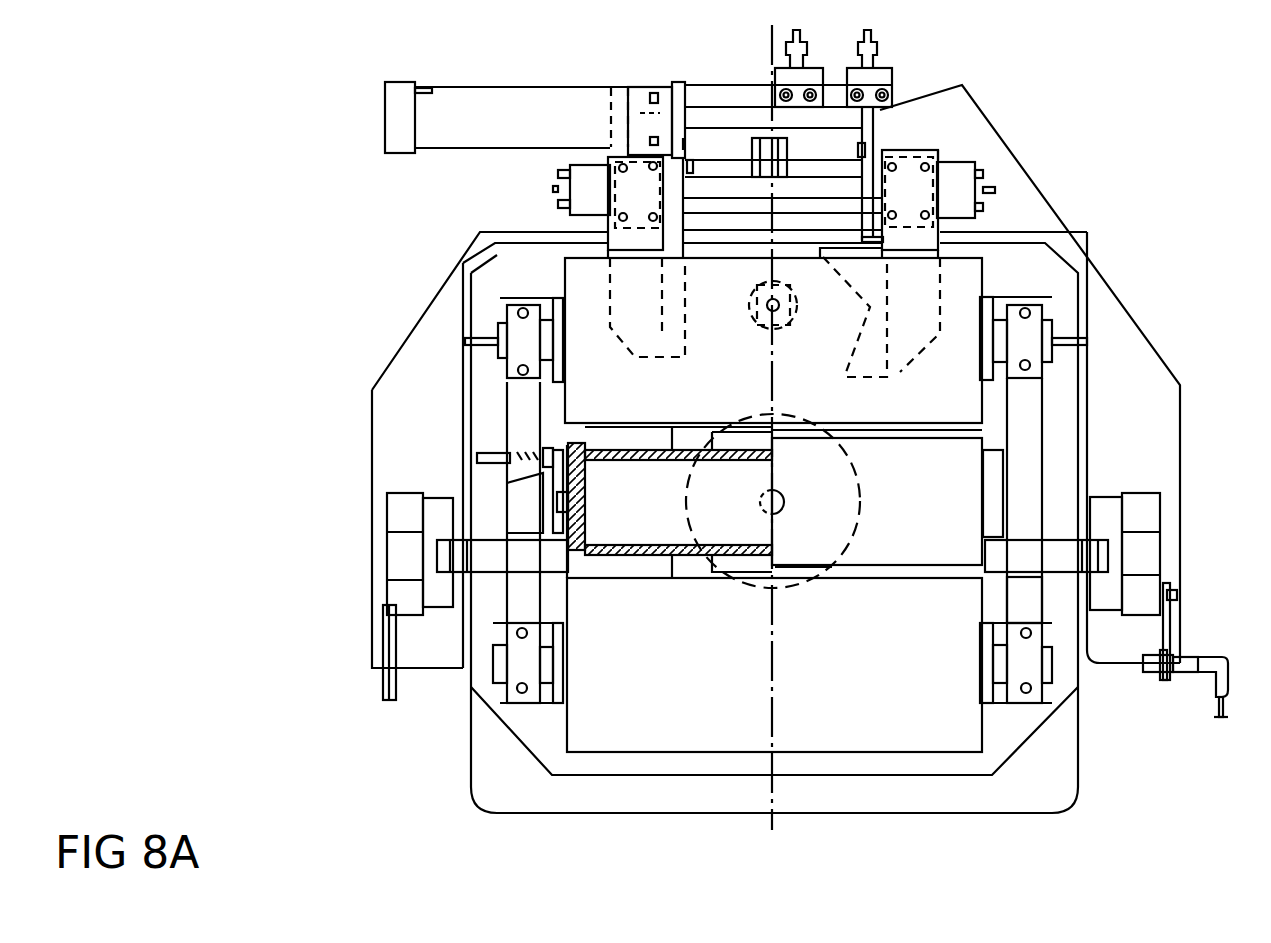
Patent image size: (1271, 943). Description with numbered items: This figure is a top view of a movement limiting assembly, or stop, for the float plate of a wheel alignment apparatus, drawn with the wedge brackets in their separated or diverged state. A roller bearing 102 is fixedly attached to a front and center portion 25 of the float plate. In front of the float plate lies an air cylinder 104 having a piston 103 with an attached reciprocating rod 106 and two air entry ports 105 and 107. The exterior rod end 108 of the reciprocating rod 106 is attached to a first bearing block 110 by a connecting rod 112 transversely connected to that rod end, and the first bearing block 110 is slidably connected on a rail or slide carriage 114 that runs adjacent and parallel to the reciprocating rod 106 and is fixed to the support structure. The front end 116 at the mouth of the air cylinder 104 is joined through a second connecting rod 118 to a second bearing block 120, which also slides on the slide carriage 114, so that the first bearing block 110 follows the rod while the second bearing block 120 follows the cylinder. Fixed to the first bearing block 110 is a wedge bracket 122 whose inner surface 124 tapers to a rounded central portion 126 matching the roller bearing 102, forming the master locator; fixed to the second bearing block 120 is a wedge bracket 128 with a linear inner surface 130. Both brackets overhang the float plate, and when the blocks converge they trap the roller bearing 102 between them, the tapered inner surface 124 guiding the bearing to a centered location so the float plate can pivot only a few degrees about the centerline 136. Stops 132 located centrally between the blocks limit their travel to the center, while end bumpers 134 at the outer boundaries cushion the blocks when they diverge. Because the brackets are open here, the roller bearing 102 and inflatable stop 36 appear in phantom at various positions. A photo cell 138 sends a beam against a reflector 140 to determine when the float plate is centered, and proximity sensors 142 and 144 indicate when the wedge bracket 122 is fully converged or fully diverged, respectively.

The front and center portion 25 is at (739, 299).
The inflatable stop 36 is at (862, 497).
The roller bearing 102 is at (760, 327).
The piston 103 is at (615, 88).
The air cylinder 104 is at (463, 83).
The air entry port 105 is at (430, 82).
The reciprocating rod 106 is at (718, 103).
The air entry port 107 is at (637, 87).
The exterior rod end 108 is at (935, 83).
The first bearing block 110 is at (938, 150).
The connecting rod 112 is at (875, 150).
The slide carriage 114 is at (717, 198).
The front end 116 is at (683, 82).
The second connecting rod 118 is at (685, 143).
The second bearing block 120 is at (610, 155).
The wedge bracket 122 is at (927, 272).
The inner surface 124 is at (832, 378).
The rounded central portion 126 is at (850, 310).
The wedge bracket 128 is at (633, 345).
The linear inner surface 130 is at (665, 348).
The stops 132 is at (790, 143).
The end bumpers 134 is at (557, 187).
The centerline 136 is at (772, 823).
The photo cell 138 is at (1183, 652).
The reflector 140 is at (390, 692).
The proximity sensor 142 is at (812, 66).
The proximity sensor 144 is at (882, 66).